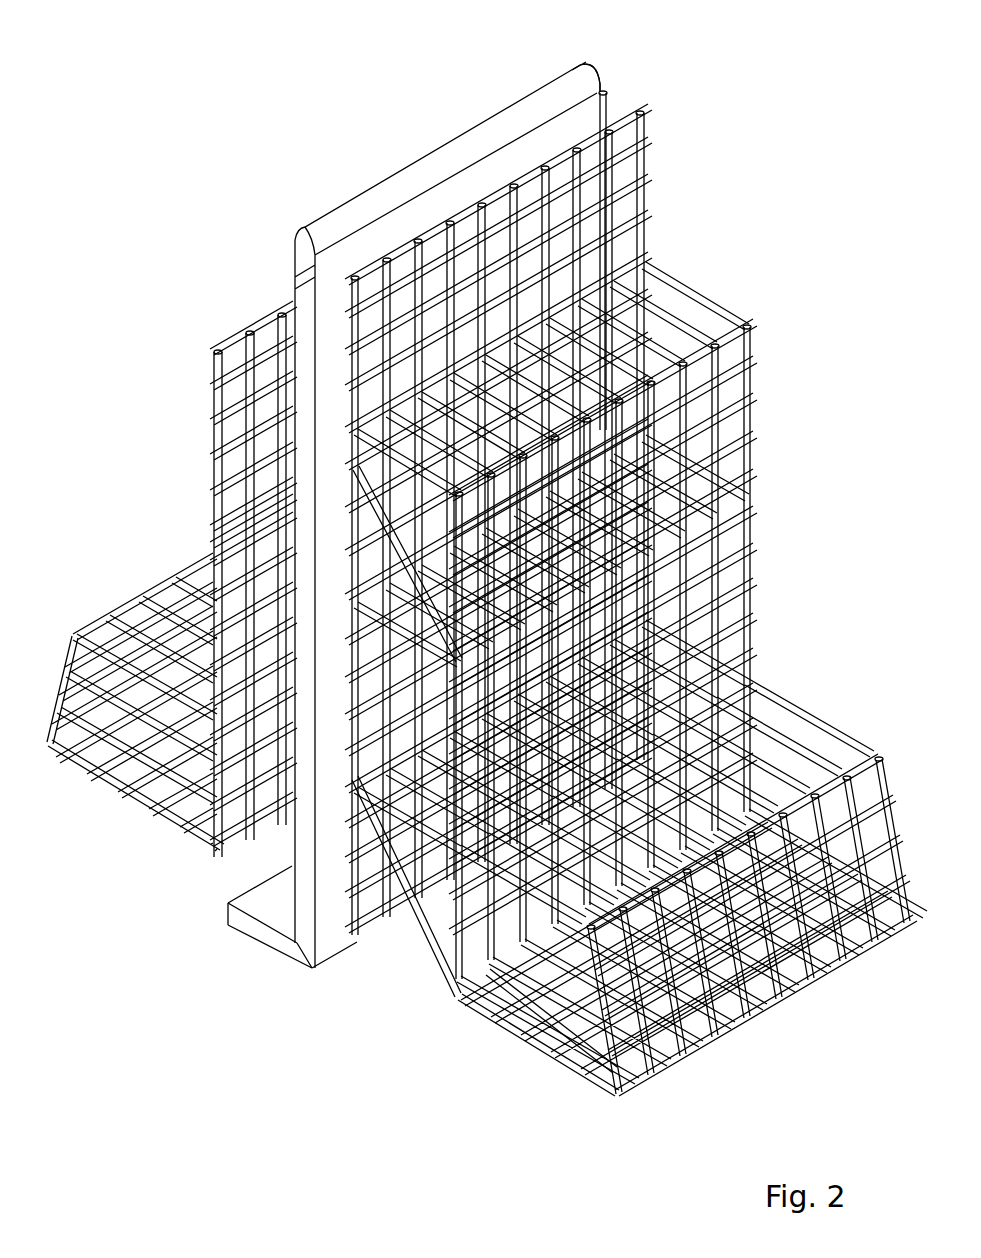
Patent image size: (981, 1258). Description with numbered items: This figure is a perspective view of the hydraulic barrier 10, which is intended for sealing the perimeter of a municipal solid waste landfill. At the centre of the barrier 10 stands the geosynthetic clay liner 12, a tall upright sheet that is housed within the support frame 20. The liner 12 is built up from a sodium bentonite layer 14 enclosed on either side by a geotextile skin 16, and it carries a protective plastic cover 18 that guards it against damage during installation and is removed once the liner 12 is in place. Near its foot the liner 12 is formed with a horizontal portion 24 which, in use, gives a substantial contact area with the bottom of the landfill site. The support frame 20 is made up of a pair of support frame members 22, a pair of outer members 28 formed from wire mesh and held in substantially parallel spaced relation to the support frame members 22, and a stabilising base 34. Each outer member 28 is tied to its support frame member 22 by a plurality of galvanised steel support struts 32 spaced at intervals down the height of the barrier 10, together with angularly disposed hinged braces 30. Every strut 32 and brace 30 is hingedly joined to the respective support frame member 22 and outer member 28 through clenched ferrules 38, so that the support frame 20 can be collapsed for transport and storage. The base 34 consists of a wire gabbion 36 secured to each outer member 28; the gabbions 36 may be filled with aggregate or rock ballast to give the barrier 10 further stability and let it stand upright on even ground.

The hydraulic barrier 10 is at (302, 181).
The geosynthetic clay liner 12 is at (287, 294).
The sodium bentonite layer 14 is at (302, 945).
The geotextile skin 16 is at (275, 912).
The protective plastic cover 18 is at (585, 75).
The support frame 20 is at (768, 462).
The support frame member 22 is at (640, 196).
The horizontal portion 24 is at (235, 965).
The outer member 28 is at (215, 437).
The hinged brace 30 is at (415, 937).
The support strut 32 is at (238, 335).
The stabilising base 34 is at (508, 1065).
The wire gabbion 36 is at (810, 720).
The clenched ferrule 38 is at (730, 300).